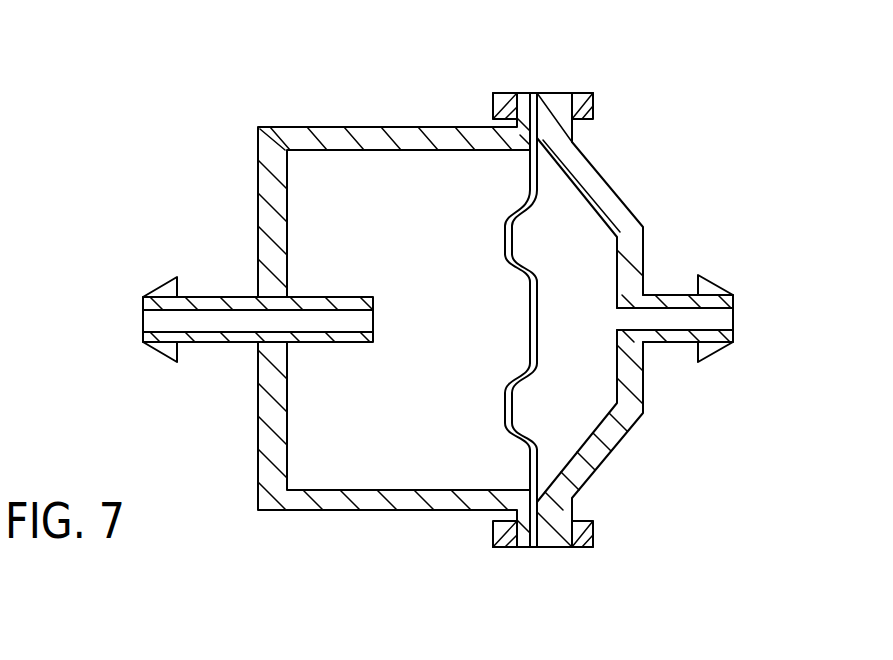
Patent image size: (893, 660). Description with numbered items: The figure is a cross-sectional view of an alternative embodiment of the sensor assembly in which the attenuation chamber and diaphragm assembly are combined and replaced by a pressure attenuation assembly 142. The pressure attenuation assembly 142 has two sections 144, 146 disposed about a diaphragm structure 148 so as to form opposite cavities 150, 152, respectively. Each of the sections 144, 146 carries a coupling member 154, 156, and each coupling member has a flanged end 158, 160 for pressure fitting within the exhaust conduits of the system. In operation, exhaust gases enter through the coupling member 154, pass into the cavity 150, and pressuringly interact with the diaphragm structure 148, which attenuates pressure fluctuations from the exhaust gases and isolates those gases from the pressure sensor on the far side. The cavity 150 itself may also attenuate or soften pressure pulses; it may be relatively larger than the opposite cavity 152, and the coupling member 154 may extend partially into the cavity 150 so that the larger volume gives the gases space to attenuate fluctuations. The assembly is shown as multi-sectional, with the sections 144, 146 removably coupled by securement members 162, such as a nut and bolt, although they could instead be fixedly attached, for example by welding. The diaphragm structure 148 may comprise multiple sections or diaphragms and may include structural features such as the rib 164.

The pressure attenuation assembly 142 is at (118, 180).
The section 144 is at (323, 511).
The section 146 is at (609, 182).
The diaphragm structure 148 is at (541, 312).
The cavity 150 is at (398, 440).
The cavity 152 is at (548, 237).
The coupling member 154 is at (198, 346).
The coupling member 156 is at (665, 347).
The flanged end 158 is at (150, 362).
The flanged end 160 is at (723, 350).
The securement members 162 is at (594, 104).
The rib 164 is at (506, 405).